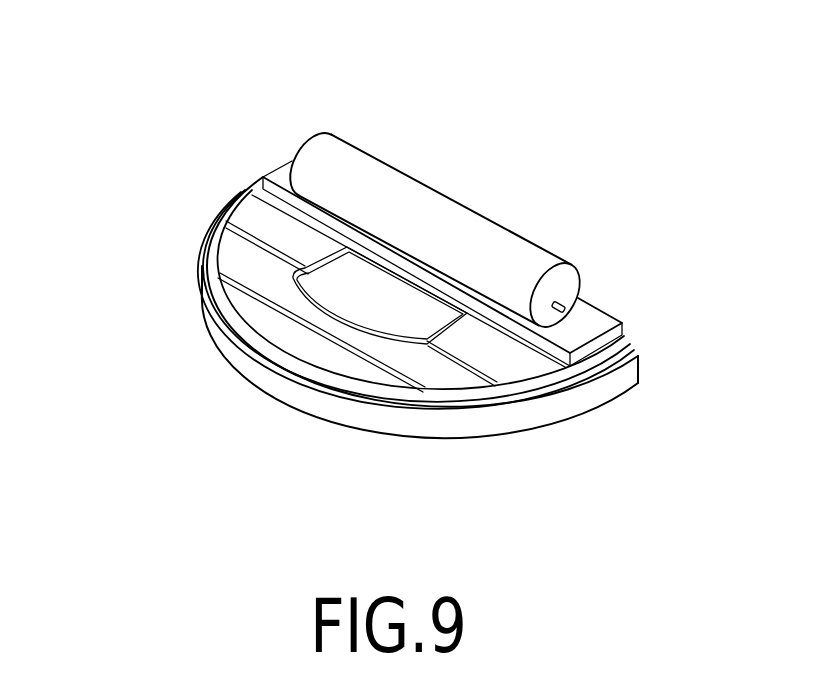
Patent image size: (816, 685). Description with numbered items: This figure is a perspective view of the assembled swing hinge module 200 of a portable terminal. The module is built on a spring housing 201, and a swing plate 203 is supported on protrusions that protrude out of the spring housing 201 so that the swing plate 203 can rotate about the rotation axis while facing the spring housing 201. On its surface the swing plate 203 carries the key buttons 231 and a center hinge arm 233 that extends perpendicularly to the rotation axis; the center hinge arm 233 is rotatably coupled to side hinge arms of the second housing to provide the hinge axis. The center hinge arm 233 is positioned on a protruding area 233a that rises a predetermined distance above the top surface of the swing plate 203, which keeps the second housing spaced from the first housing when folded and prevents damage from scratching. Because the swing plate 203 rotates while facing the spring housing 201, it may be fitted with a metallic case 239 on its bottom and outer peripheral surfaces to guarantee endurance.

The swing hinge module 200 is at (190, 121).
The spring housing 201 is at (545, 415).
The swing plate 203 is at (567, 245).
The key buttons 231 is at (263, 317).
The center hinge arm 233 is at (377, 183).
The protruding area 233a is at (590, 320).
The metallic case 239 is at (360, 378).